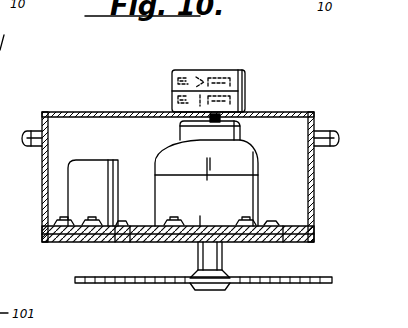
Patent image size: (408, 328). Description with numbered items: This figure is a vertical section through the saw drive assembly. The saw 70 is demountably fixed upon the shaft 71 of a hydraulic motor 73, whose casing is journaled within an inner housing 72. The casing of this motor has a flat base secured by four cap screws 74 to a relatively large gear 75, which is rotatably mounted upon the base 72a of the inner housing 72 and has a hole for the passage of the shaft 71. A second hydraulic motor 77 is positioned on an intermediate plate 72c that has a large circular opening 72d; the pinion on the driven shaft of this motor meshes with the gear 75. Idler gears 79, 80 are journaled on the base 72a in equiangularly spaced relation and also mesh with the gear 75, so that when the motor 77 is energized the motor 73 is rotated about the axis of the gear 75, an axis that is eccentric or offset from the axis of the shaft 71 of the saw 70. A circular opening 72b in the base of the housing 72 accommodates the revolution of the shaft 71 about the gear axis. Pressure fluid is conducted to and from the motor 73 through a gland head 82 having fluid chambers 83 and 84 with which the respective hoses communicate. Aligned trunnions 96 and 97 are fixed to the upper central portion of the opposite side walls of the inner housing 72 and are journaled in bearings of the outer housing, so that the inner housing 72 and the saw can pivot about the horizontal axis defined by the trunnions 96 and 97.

The saw 70 is at (284, 284).
The shaft 71 is at (223, 259).
The inner housing 72 is at (315, 200).
The base of inner housing 72a is at (151, 241).
The circular opening 72b is at (284, 243).
The intermediate plate 72c is at (124, 222).
The large circular opening 72d is at (137, 243).
The hydraulic motor 73 is at (259, 157).
The cap screws 74 is at (168, 214).
The gear 75 is at (200, 227).
The hydraulic motor 77 is at (100, 172).
The idler gear 79 is at (294, 241).
The idler gear 80 is at (117, 240).
The gland head 82 is at (249, 79).
The fluid chamber 83 is at (175, 80).
The fluid chamber 84 is at (178, 93).
The trunnion 96 is at (30, 133).
The trunnion 97 is at (327, 130).